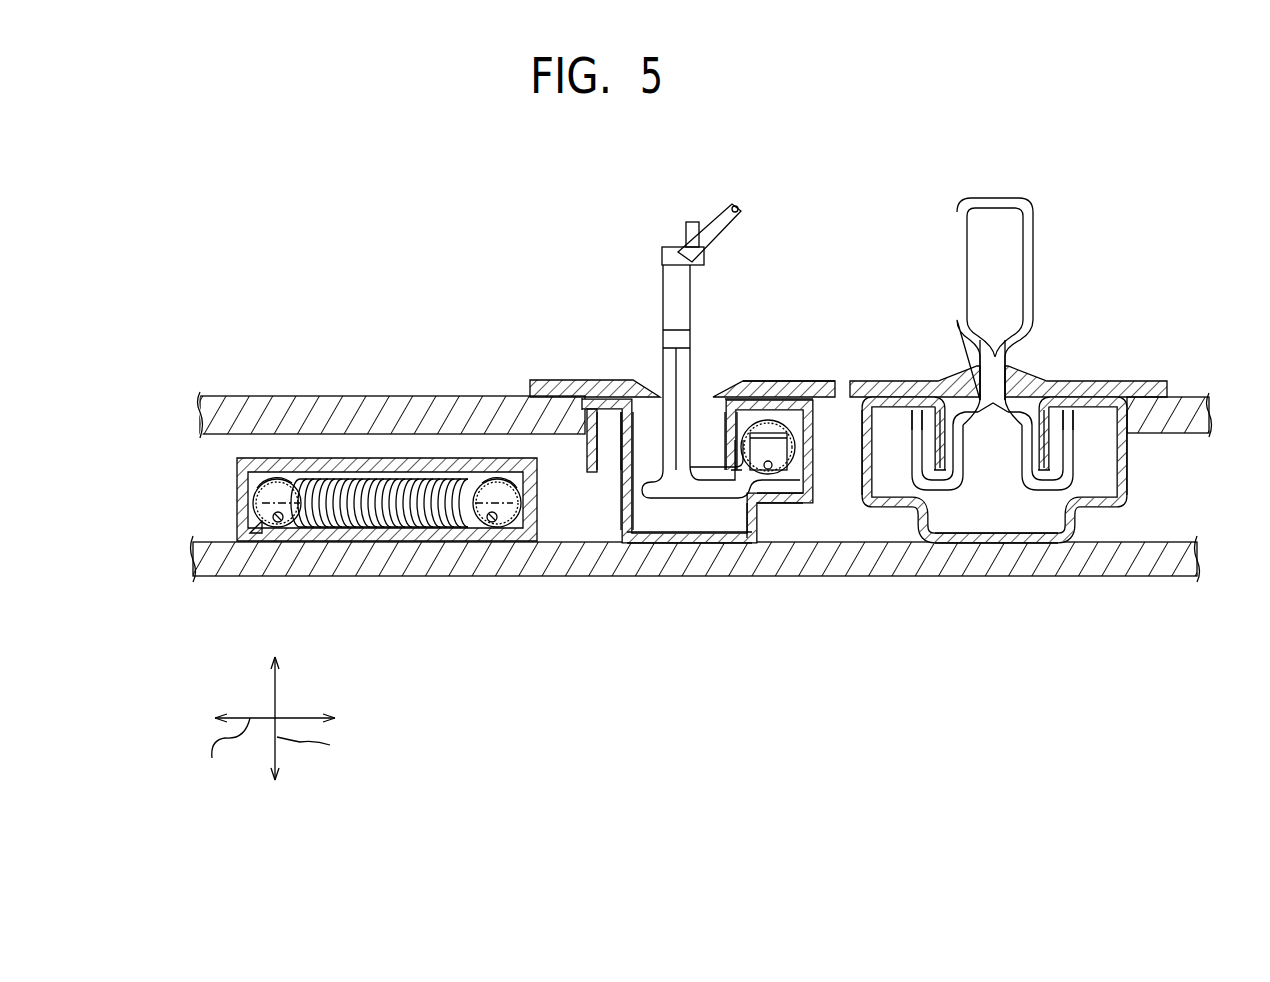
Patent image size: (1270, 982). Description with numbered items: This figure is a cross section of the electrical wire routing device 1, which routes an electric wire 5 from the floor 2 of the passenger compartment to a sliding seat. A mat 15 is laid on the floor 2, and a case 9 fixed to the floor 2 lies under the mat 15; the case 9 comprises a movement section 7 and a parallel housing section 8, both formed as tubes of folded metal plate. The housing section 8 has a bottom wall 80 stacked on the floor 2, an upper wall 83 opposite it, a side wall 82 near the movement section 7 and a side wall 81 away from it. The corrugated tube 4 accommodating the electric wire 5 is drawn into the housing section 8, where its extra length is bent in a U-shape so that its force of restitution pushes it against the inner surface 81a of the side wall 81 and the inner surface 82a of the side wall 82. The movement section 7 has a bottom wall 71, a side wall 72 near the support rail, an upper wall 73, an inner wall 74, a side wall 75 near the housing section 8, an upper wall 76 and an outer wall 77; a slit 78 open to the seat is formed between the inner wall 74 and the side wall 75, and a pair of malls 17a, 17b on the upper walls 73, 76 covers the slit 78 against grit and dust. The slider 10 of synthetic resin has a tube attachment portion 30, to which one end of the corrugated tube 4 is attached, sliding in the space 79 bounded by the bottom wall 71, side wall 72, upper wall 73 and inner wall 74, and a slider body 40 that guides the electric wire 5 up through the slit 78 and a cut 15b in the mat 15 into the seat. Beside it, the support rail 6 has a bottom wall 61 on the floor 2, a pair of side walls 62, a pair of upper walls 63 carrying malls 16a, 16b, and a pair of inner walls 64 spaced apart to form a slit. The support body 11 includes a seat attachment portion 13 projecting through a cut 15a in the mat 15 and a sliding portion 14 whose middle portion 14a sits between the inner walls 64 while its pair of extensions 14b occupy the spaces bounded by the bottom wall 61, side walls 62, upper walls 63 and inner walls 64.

The electrical wire routing device 1 is at (435, 272).
The floor 2 is at (1165, 574).
The corrugated tube 4 is at (256, 532).
The electric wire 5 is at (729, 208).
The support rail 6 is at (1130, 452).
The movement section 7 is at (688, 495).
The housing section 8 is at (369, 506).
The case 9 is at (598, 680).
The slider 10 is at (710, 247).
The support body 11 is at (1036, 243).
The seat attachment portion 13 is at (958, 221).
The sliding portion 14 is at (1040, 405).
The middle portion 14a is at (1018, 400).
The extensions 14b is at (918, 434).
The mat 15 is at (211, 396).
The cut 15a is at (1132, 412).
The cut 15b is at (820, 383).
The mall 16a is at (1160, 380).
The mall 16b is at (896, 380).
The mall 17a is at (775, 396).
The mall 17b is at (567, 380).
The tube attachment portion 30 is at (797, 455).
The slider body 40 is at (696, 280).
The bottom wall 61 is at (1003, 546).
The side wall 62 is at (1128, 482).
The upper wall 63 is at (938, 398).
The inner wall 64 is at (917, 430).
The bottom wall 71 is at (690, 546).
The side wall 72 is at (796, 500).
The upper wall 73 is at (790, 392).
The inner wall 74 is at (702, 480).
The side wall 75 is at (627, 546).
The upper wall 76 is at (616, 455).
The outer wall 77 is at (591, 452).
The slit 78 is at (648, 400).
The space 79 is at (740, 397).
The bottom wall 80 is at (388, 530).
The side wall 81 is at (250, 510).
The inner surface 81a is at (266, 497).
The side wall 82 is at (517, 522).
The inner surface 82a is at (521, 490).
The upper wall 83 is at (335, 460).